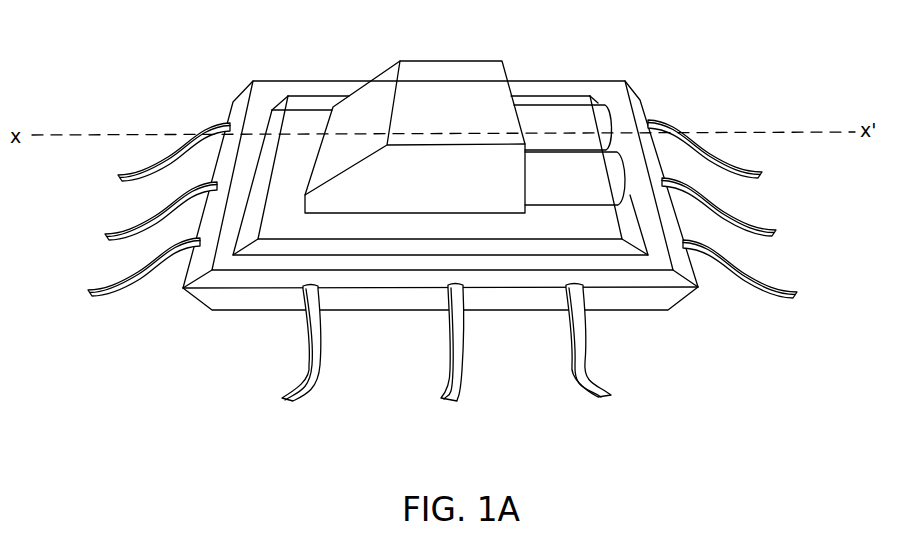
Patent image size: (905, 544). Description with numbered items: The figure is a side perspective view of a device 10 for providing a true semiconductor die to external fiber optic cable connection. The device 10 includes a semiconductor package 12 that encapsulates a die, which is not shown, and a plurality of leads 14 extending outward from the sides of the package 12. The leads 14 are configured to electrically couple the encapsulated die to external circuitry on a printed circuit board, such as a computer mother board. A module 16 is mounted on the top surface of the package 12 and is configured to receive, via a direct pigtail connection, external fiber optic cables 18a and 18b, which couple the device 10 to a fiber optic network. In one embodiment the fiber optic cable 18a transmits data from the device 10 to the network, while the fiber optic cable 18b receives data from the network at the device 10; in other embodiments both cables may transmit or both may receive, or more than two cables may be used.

The device 10 is at (450, 221).
The semiconductor package 12 is at (639, 93).
The leads 14 is at (102, 234).
The module 16 is at (453, 72).
The fiber optic cable 18a is at (575, 178).
The fiber optic cable 18b is at (563, 127).